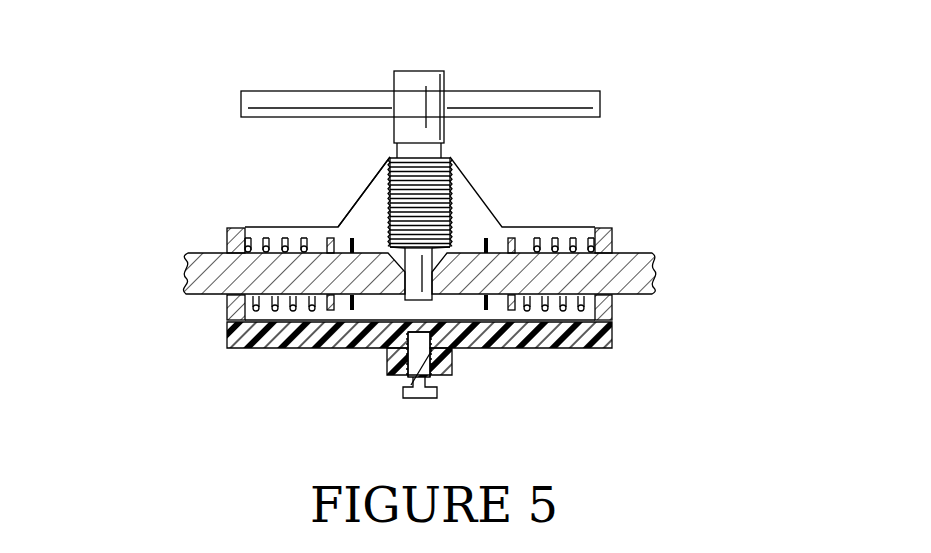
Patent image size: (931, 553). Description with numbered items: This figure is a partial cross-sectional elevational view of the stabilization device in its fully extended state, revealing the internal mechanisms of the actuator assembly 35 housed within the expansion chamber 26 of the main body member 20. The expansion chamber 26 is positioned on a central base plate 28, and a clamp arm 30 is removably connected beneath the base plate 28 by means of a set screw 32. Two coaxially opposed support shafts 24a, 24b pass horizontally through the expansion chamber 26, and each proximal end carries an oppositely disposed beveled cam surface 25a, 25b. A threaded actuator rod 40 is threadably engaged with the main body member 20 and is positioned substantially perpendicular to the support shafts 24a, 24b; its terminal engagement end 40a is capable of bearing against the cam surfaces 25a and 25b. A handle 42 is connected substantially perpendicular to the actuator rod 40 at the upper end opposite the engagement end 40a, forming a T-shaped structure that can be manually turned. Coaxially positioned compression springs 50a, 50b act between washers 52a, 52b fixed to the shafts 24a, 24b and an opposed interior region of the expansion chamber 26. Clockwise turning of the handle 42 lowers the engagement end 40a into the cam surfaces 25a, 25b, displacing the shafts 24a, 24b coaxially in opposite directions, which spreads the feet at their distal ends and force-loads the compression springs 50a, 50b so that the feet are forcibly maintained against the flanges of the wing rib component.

The main body member 20 is at (252, 218).
The support shaft 24a is at (293, 285).
The support shaft 24b is at (604, 285).
The beveled cam surface 25a is at (432, 258).
The beveled cam surface 25b is at (440, 250).
The expansion chamber 26 is at (612, 240).
The base plate 28 is at (227, 335).
The clamp arm 30 is at (452, 362).
The set screw 32 is at (426, 400).
The actuator assembly 35 is at (375, 218).
The threaded actuator rod 40 is at (433, 255).
The terminal engagement end 40a is at (413, 290).
The handle 42 is at (260, 103).
The compression spring 50a is at (288, 310).
The compression spring 50b is at (562, 220).
The washer 52a is at (335, 312).
The washer 52b is at (510, 312).